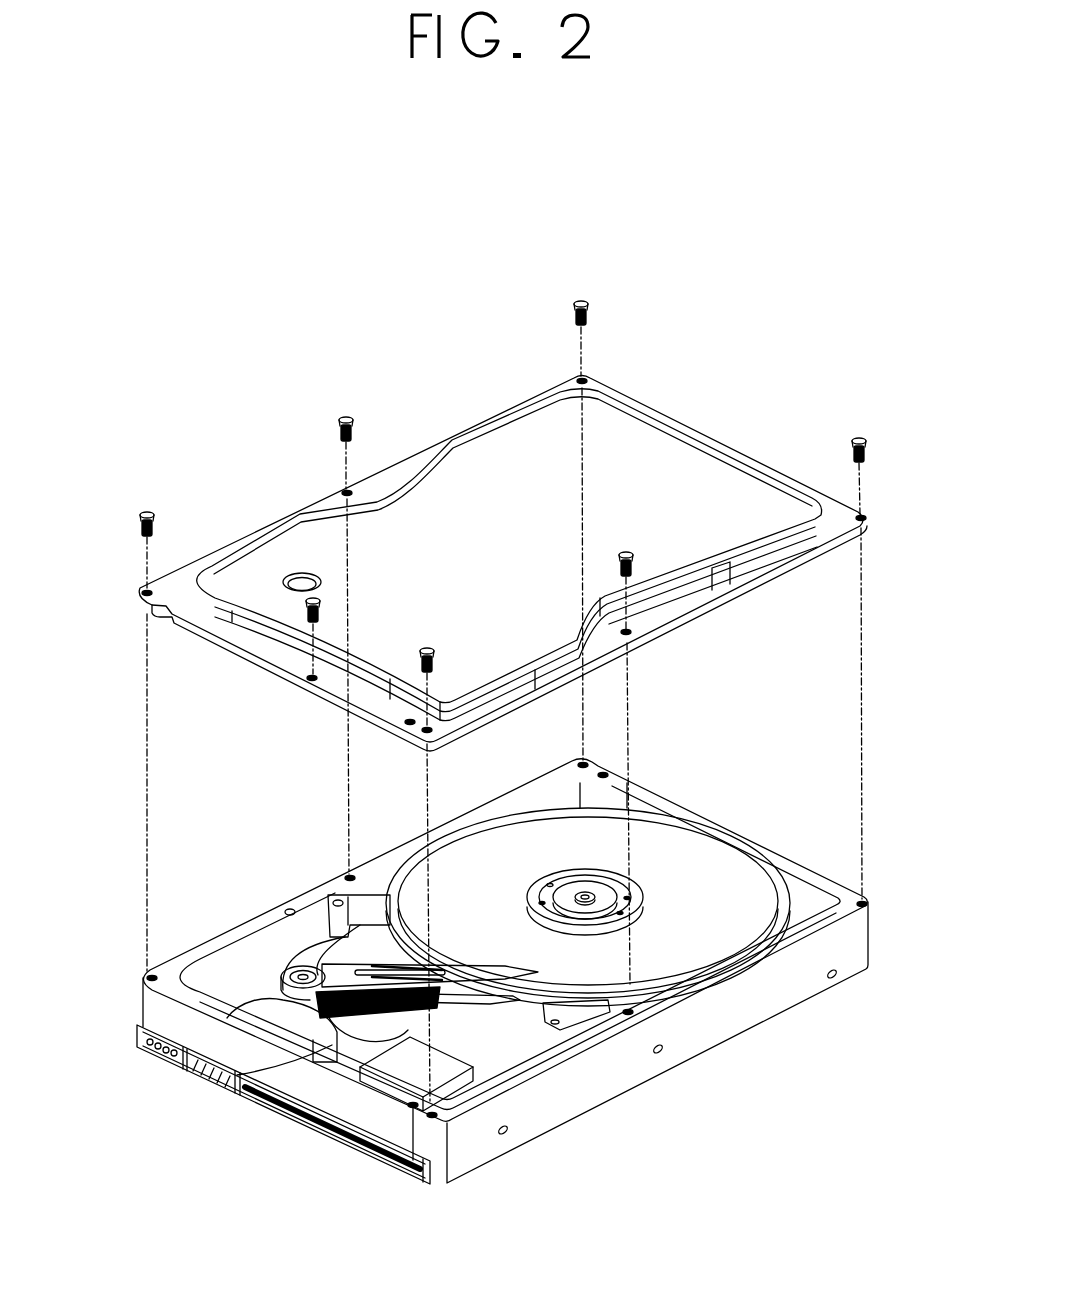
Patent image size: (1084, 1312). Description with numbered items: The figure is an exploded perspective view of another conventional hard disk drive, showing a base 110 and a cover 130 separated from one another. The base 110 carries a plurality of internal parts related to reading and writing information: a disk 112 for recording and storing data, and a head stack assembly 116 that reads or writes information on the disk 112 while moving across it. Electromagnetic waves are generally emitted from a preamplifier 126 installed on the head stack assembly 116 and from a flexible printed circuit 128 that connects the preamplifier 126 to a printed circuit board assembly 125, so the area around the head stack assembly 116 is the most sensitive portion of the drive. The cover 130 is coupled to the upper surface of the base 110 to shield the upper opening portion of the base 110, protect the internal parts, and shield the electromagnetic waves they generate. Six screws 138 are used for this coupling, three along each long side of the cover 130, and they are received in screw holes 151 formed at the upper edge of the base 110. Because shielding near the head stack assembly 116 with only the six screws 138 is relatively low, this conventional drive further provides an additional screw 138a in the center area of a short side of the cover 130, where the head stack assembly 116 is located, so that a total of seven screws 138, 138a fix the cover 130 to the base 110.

The base 110 is at (474, 998).
The disk 112 is at (667, 862).
The head stack assembly 116 is at (330, 892).
The printed circuit board assembly 125 is at (387, 1167).
The preamplifier 126 is at (215, 1003).
The flexible printed circuit 128 is at (232, 1077).
The cover 130 is at (667, 407).
The screws 138 is at (858, 437).
The additional screw 138a is at (320, 599).
The screw holes 151 is at (148, 978).